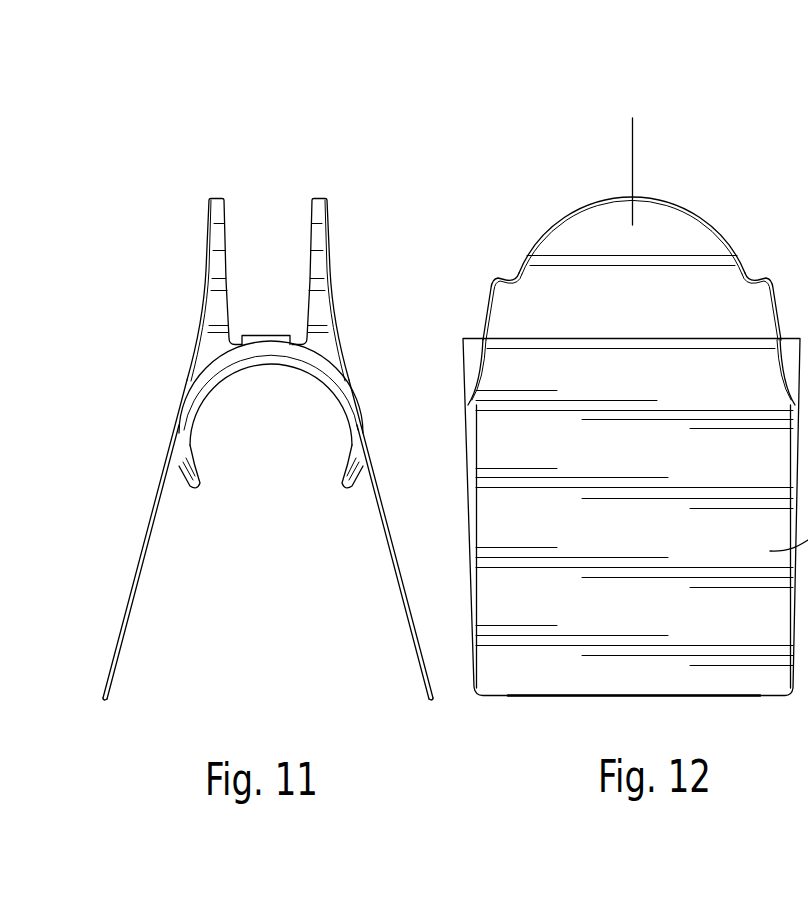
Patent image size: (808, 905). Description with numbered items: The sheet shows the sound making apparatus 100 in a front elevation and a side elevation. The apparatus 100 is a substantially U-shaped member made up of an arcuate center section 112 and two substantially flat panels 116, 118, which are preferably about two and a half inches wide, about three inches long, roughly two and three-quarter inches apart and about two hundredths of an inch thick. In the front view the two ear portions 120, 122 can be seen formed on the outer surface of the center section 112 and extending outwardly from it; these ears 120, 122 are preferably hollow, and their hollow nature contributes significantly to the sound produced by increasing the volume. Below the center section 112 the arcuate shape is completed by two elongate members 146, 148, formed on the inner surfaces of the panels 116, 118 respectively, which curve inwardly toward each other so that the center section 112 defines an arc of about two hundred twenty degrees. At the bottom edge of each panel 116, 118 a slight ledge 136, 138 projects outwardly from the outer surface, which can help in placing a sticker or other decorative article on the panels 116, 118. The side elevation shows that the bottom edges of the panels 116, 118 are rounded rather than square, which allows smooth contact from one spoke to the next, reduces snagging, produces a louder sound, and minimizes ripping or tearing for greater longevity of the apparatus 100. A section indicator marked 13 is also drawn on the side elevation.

In FIG. 11, the sound making apparatus 100 is at (464, 111).
In FIG. 11, the arcuate center section 112 is at (326, 357).
In FIG. 11, the panel 116 is at (125, 637).
In FIG. 11, the panel 118 is at (405, 615).
In FIG. 11, the ear portion 120 is at (217, 196).
In FIG. 12, the ear portion 120 is at (680, 228).
In FIG. 11, the ear portion 122 is at (316, 196).
In FIG. 11, the ledge 136 is at (101, 700).
In FIG. 12, the ledge 136 is at (630, 697).
In FIG. 11, the ledge 138 is at (437, 698).
In FIG. 11, the elongate member 146 is at (199, 470).
In FIG. 11, the elongate member 148 is at (356, 455).
In FIG. 12, the section line 13 is at (652, 142).